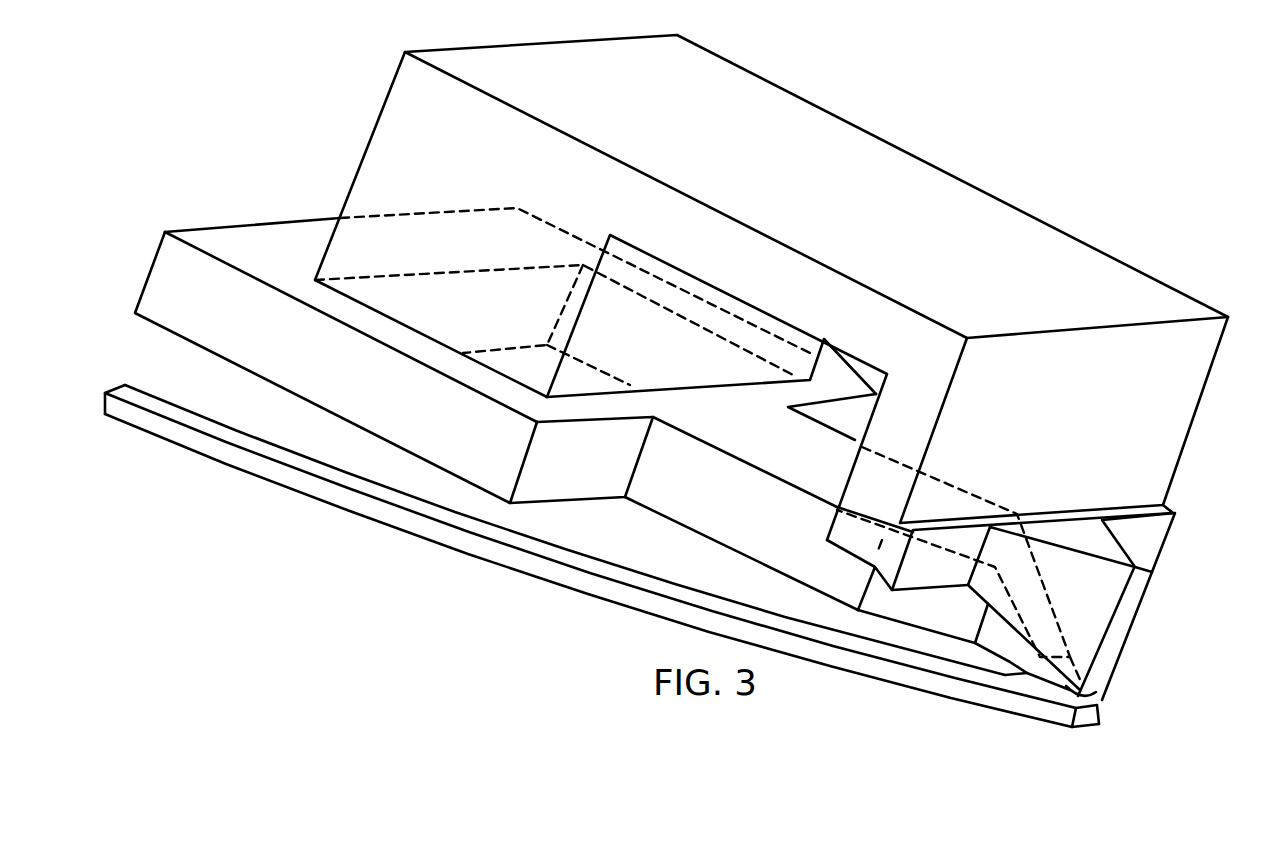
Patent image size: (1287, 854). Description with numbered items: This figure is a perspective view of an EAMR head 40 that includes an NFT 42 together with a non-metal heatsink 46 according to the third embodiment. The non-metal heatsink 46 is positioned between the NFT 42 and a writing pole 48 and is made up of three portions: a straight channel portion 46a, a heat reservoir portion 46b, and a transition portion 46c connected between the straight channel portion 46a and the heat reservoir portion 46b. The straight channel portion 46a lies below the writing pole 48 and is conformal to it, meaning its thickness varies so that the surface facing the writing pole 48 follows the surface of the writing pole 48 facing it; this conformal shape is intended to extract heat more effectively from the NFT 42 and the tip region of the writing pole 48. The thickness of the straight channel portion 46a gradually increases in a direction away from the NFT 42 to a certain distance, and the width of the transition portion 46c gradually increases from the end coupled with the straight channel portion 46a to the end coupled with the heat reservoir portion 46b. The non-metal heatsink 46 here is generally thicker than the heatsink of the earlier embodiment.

The EAMR head 40 is at (1100, 172).
The NFT 42 is at (1090, 705).
The non-metal heatsink 46 is at (587, 448).
The straight channel portion 46a is at (1013, 662).
The heat reservoir portion 46b is at (160, 270).
The transition portion 46c is at (700, 533).
The writing pole 48 is at (1140, 610).